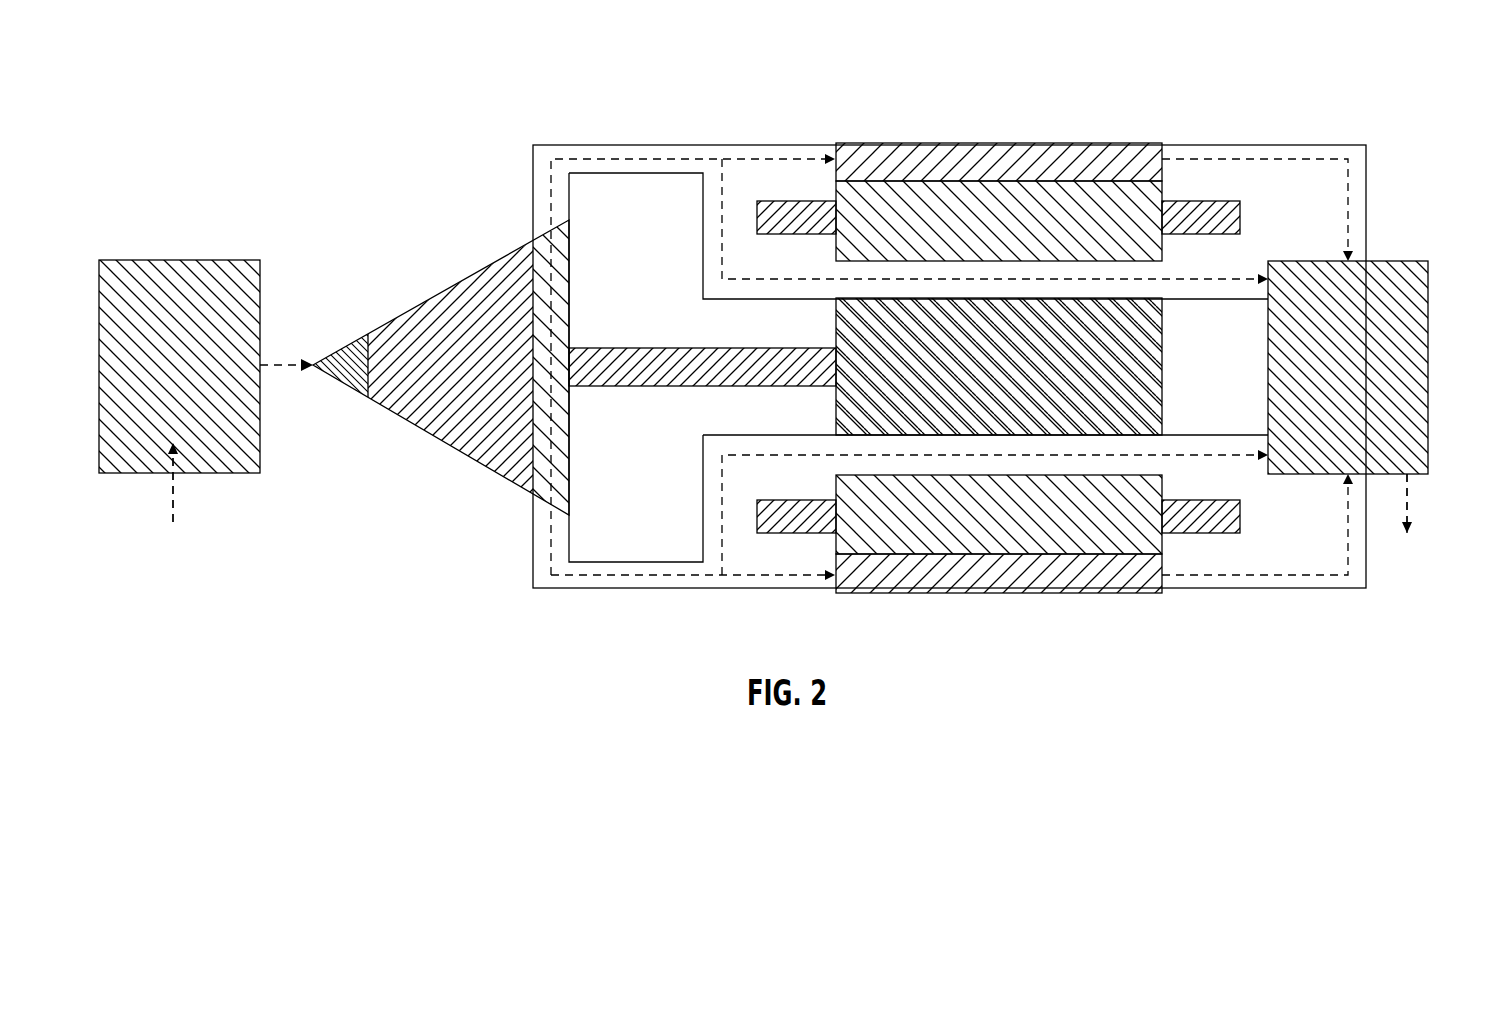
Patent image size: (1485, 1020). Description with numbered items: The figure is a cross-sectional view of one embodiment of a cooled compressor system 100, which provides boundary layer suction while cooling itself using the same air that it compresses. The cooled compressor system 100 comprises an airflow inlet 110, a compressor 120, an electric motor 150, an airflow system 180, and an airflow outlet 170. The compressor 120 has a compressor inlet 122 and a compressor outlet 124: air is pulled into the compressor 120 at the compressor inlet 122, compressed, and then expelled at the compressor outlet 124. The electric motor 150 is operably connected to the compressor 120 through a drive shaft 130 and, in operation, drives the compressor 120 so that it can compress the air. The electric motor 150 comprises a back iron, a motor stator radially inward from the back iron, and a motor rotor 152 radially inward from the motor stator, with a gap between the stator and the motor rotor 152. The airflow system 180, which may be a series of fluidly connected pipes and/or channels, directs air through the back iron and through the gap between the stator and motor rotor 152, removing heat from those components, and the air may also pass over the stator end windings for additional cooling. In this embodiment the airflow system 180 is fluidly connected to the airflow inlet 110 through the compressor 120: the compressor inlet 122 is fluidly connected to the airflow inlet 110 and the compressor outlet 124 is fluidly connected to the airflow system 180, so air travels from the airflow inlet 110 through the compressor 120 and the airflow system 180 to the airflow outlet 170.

The cooled compressor system 100 is at (224, 76).
The airflow inlet 110 is at (258, 437).
The compressor 120 is at (435, 330).
The compressor inlet 122 is at (357, 336).
The compressor outlet 124 is at (548, 262).
The drive shaft 130 is at (653, 350).
The electric motor 150 is at (1035, 110).
The motor rotor 152 is at (1152, 380).
The airflow outlet 170 is at (1378, 268).
The airflow system 180 is at (582, 590).